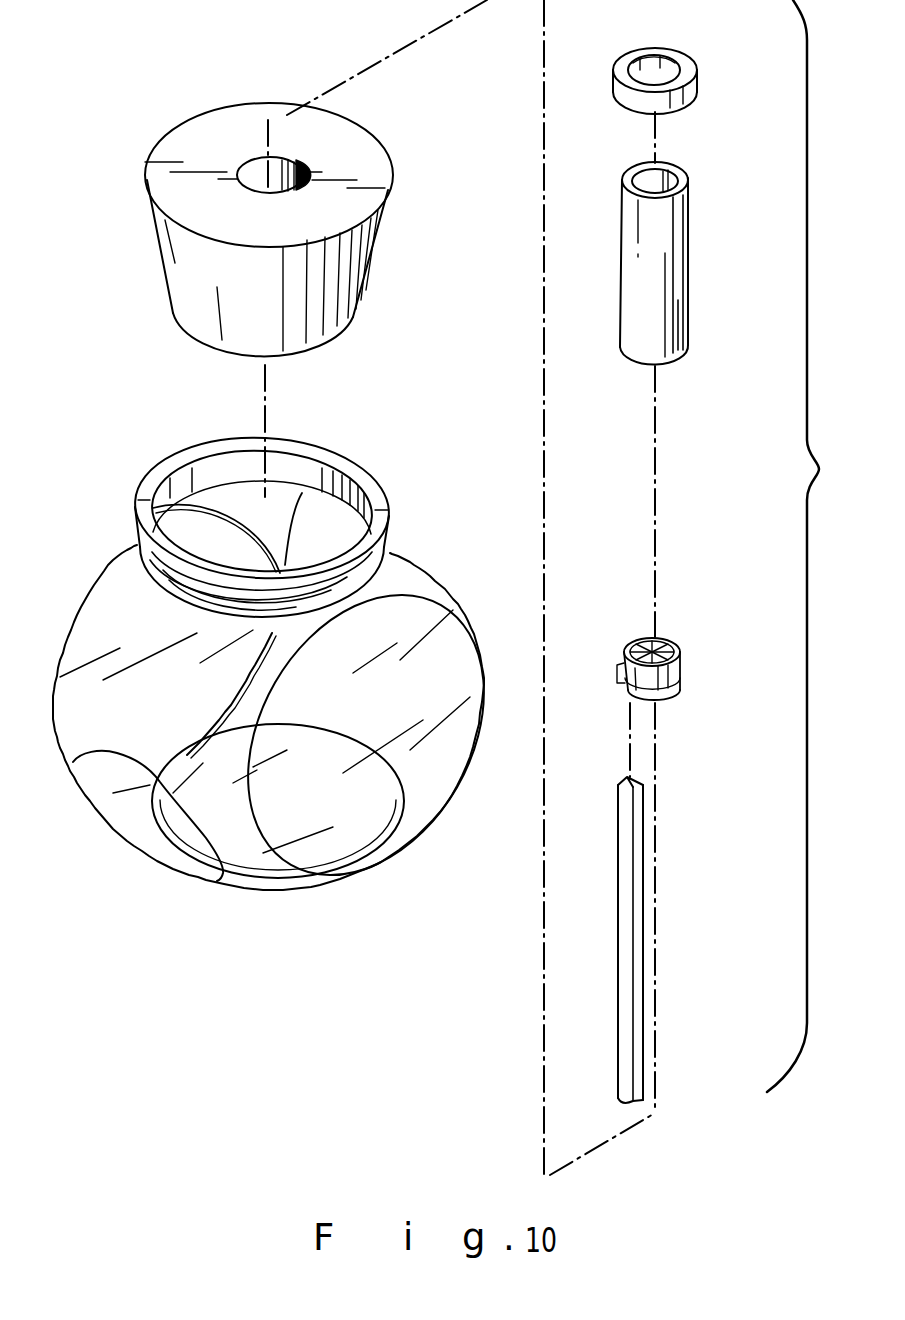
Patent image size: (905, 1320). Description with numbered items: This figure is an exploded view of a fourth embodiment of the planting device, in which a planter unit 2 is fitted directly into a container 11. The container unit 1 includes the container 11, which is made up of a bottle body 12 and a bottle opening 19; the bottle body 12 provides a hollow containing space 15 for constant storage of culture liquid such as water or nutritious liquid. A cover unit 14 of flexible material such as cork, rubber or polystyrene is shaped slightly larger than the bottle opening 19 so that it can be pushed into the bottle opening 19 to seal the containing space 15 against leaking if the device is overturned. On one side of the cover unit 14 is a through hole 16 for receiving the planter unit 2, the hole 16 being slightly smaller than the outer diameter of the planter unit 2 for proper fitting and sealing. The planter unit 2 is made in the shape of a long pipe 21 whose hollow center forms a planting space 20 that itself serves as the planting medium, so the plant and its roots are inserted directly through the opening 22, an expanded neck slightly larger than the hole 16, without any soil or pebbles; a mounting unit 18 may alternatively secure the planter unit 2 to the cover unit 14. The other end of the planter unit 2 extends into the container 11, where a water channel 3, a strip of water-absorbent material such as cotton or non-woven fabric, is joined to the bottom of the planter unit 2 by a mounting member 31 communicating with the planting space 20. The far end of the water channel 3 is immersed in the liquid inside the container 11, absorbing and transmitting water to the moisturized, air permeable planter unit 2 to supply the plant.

The container unit 1 is at (414, 524).
The container 11 is at (395, 550).
The bottle body 12 is at (423, 585).
The cover unit 14 is at (357, 277).
The containing space 15 is at (302, 493).
The through hole 16 is at (300, 170).
The mounting unit 18 is at (698, 90).
The bottle opening 19 is at (368, 495).
The planter unit 2 is at (692, 324).
The planting space 20 is at (688, 207).
The long pipe 21 is at (678, 288).
The opening 22 is at (690, 177).
The water channel 3 is at (635, 860).
The mounting member 31 is at (680, 668).